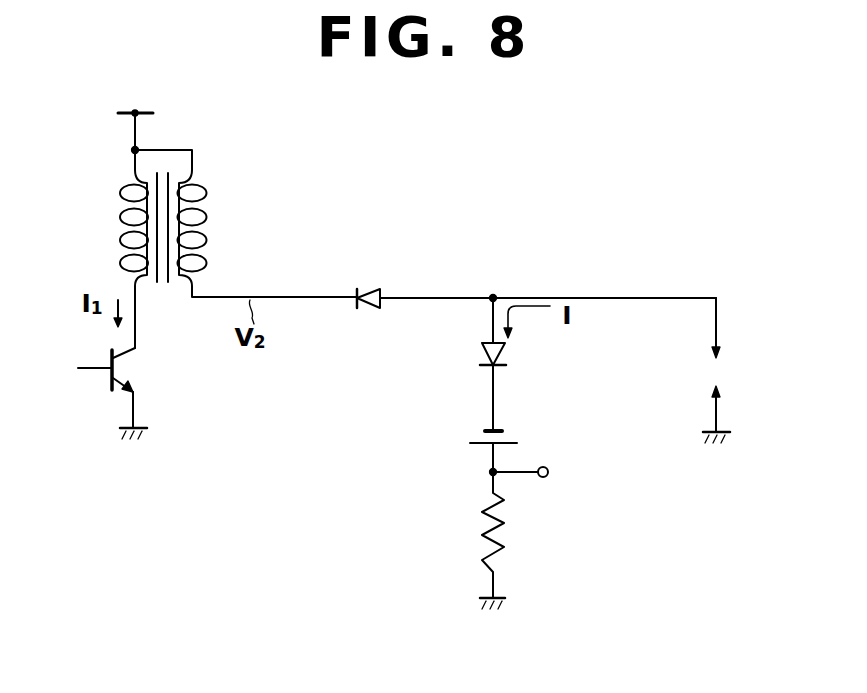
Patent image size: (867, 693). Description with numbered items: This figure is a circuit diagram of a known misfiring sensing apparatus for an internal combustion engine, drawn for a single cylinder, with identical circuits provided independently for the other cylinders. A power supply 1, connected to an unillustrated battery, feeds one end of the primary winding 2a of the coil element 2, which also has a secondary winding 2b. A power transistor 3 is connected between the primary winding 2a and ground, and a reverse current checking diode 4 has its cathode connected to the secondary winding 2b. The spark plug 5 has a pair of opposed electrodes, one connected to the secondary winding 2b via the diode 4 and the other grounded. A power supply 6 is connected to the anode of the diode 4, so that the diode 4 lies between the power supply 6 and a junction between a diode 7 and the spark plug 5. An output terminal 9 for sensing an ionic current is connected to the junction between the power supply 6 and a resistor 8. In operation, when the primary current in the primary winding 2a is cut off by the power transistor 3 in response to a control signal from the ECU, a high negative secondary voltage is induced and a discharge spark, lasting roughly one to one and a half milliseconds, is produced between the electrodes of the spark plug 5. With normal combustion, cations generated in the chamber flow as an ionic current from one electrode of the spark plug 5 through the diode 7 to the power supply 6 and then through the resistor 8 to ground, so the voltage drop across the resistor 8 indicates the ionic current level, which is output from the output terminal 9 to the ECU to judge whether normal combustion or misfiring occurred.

The power supply 1 is at (136, 110).
The spark plug (ignition coil) 2 is at (208, 223).
The primary winding 2a is at (119, 232).
The secondary winding 2b is at (206, 229).
The power transistor 3 is at (125, 367).
The reverse current checking diode 4 is at (378, 290).
The spark plug 5 is at (713, 368).
The power supply 6 is at (481, 438).
The diode 7 is at (498, 351).
The resistor 8 is at (484, 525).
The output terminal 9 is at (550, 472).